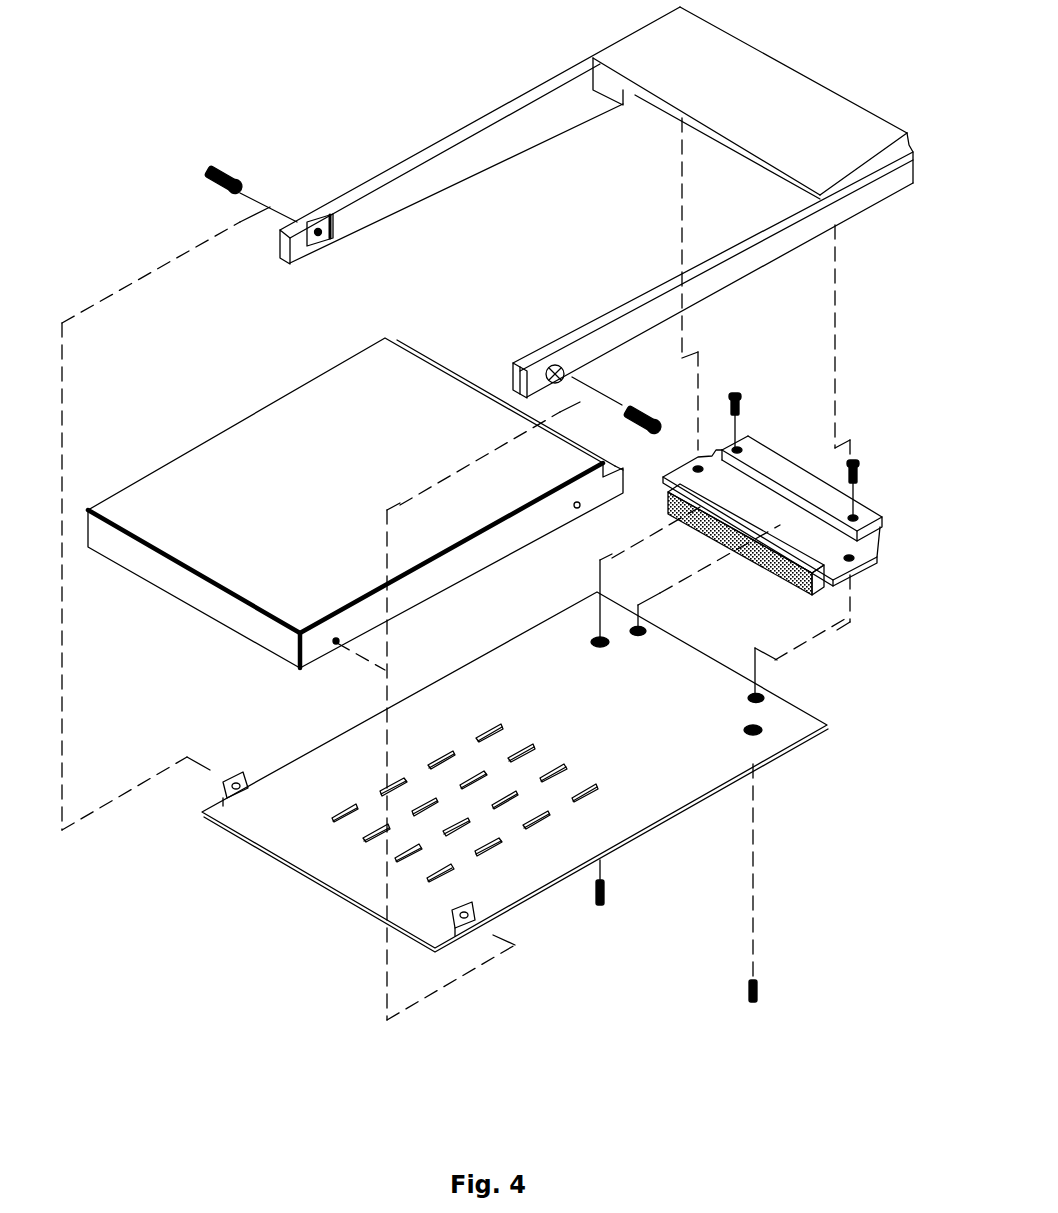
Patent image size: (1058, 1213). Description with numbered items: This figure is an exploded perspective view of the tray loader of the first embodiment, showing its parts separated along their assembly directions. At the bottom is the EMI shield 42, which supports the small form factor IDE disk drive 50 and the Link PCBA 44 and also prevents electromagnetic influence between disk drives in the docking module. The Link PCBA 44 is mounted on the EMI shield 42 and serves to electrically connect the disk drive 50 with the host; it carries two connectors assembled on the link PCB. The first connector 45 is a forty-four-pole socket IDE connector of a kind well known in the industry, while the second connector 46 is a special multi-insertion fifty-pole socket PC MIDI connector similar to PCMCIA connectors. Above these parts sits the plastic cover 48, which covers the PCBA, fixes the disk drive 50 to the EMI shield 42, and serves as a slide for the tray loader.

The EMI shield 42 is at (780, 748).
The Link PCBA 44 is at (803, 520).
The first connector 45 is at (810, 590).
The second connector 46 is at (752, 442).
The plastic cover 48 is at (848, 112).
The small form factor IDE disk drive 50 is at (262, 432).